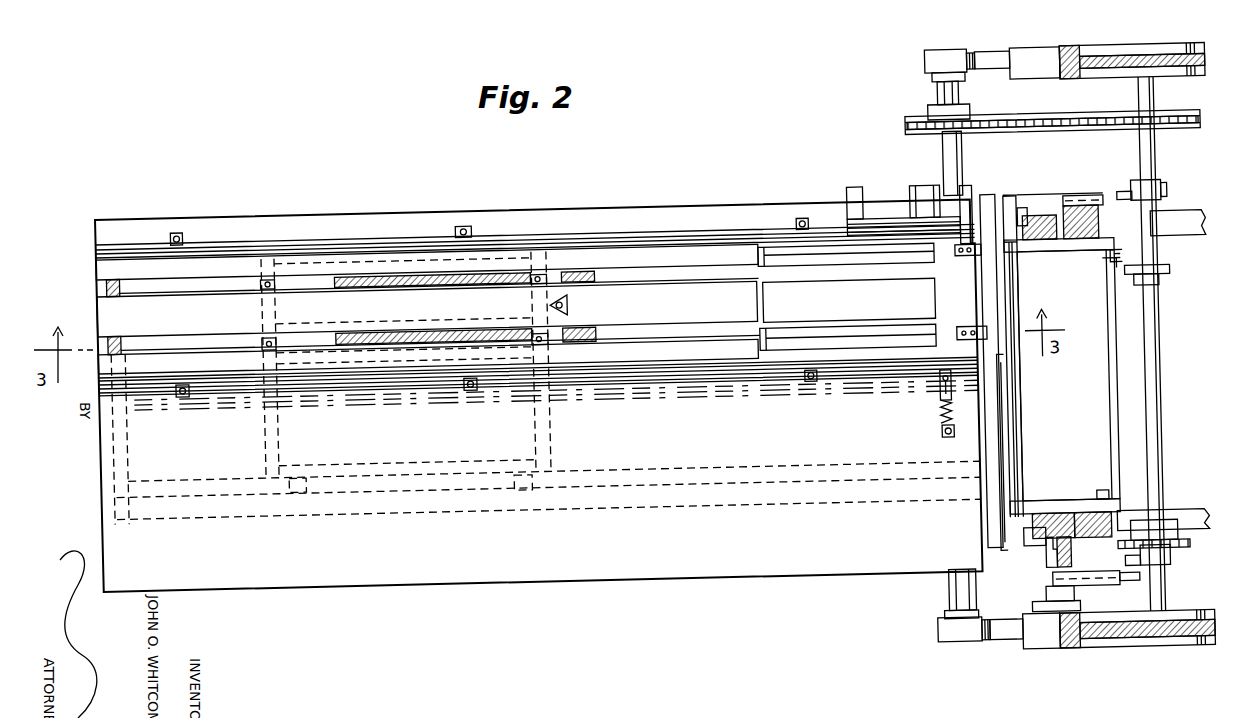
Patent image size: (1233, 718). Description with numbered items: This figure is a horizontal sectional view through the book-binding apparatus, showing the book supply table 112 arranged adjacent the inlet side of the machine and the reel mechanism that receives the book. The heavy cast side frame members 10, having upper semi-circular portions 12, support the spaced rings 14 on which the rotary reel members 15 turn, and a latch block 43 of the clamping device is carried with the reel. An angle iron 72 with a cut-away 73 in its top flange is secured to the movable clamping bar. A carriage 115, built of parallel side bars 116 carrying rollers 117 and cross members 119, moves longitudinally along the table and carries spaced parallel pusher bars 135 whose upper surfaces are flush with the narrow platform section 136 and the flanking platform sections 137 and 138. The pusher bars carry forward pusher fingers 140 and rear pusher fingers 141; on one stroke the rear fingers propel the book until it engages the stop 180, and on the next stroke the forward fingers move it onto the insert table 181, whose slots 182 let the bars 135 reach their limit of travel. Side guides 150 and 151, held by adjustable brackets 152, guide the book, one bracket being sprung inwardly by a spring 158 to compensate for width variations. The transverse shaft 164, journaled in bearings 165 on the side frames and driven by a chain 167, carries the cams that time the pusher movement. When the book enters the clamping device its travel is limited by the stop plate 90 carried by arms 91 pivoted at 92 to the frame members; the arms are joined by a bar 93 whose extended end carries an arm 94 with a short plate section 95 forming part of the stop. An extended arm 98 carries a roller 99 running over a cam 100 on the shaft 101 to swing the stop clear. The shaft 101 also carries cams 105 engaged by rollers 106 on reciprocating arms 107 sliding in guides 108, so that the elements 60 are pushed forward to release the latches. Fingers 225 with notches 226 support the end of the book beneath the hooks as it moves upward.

The side frame members 10 is at (1065, 50).
The upper semi-circular portions 12 is at (1055, 47).
The rings 14 is at (1088, 233).
The rotary reel members 15 is at (1053, 224).
The latch block 43 is at (1017, 526).
The elements 60 is at (1034, 208).
The angle iron 72 is at (998, 423).
The cut-away 73 is at (997, 356).
The stop plate 90 is at (1010, 448).
The arms 91 is at (1054, 253).
The pivot 92 is at (1101, 480).
The bar 93 is at (1113, 392).
The arm 94 is at (1083, 205).
The short plate section 95 is at (1014, 193).
The extended arm 98 is at (1122, 258).
The roller 99 is at (1109, 264).
The cam 100 is at (1173, 274).
The shaft 101 is at (1160, 346).
The cams 105 is at (1168, 194).
The roller 106 is at (1123, 194).
The reciprocating arm 107 is at (1153, 224).
The guide 108 is at (1068, 194).
The book supply table 112 is at (210, 213).
The carriage 115 is at (255, 440).
The side bars 116 is at (336, 256).
The rollers 117 is at (286, 498).
The cross members 119 is at (556, 448).
The pusher bars 135 is at (503, 288).
The platform section 136 is at (184, 325).
The platform section 137 is at (95, 274).
The platform section 138 is at (187, 376).
The forward pusher fingers 140 is at (567, 288).
The rear pusher fingers 141 is at (327, 341).
The side guide 150 is at (712, 247).
The side guide 151 is at (709, 375).
The brackets 152 is at (174, 400).
The spring 158 is at (935, 445).
The transverse shaft 164 is at (949, 161).
The bearings 165 is at (972, 52).
The chain 167 is at (1062, 114).
The stop 180 is at (568, 318).
The insert table 181 is at (861, 329).
The slots 182 is at (812, 350).
The fingers 225 is at (955, 351).
The notches 226 is at (991, 329).